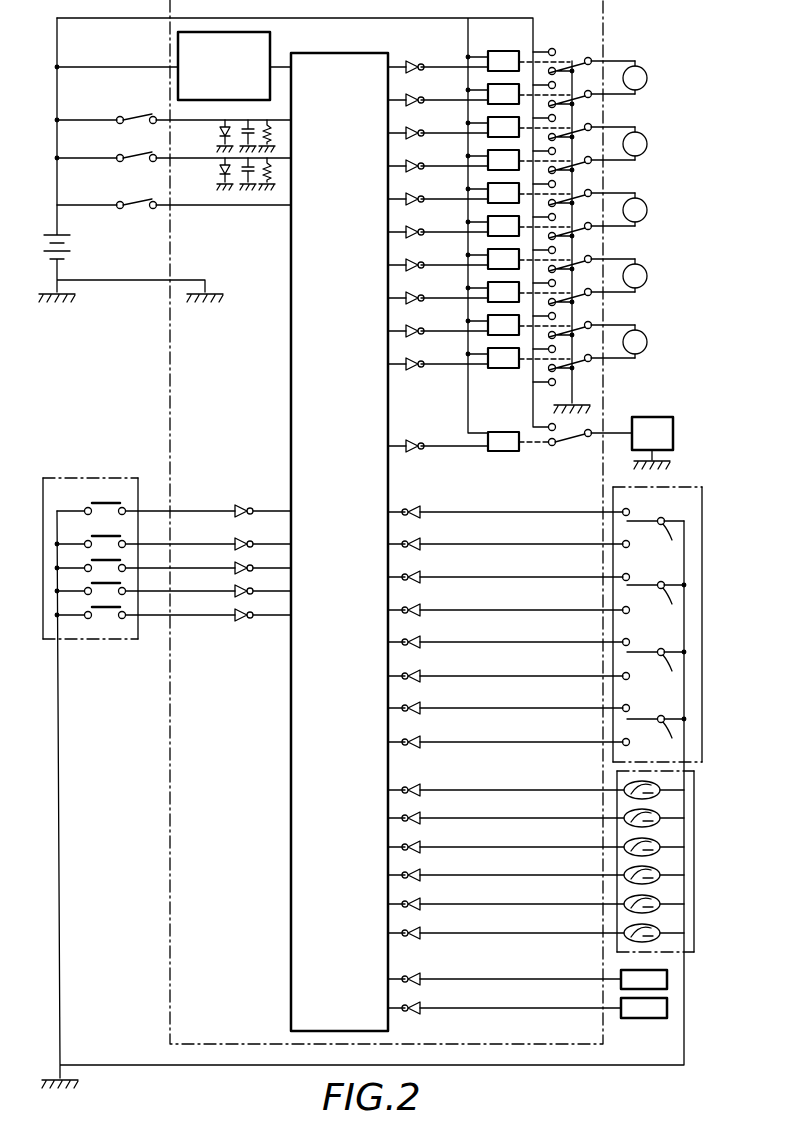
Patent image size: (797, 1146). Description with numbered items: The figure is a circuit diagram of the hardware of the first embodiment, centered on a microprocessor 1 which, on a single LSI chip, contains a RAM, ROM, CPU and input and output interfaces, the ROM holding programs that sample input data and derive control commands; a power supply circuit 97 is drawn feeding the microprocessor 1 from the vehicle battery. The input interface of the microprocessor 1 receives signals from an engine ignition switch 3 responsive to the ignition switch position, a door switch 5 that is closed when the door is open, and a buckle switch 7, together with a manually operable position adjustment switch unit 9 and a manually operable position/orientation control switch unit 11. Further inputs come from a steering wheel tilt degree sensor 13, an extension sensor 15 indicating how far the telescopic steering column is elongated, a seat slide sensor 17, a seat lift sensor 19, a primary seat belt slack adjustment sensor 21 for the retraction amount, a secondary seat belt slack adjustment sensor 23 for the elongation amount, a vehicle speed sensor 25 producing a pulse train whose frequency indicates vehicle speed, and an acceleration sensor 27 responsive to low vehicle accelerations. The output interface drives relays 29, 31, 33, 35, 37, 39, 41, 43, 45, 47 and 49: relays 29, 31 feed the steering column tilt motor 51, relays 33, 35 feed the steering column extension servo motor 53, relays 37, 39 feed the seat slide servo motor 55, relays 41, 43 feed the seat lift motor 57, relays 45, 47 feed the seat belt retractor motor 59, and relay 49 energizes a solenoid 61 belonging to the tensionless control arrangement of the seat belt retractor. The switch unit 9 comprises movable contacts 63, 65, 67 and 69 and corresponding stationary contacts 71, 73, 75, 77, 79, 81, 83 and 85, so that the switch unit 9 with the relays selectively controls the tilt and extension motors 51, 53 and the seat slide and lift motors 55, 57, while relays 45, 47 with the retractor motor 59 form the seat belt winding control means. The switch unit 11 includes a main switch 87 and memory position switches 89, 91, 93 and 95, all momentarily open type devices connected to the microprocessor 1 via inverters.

The microprocessor 1 is at (362, 53).
The engine ignition switch 3 is at (123, 113).
The door switch 5 is at (123, 151).
The buckle switch 7 is at (128, 195).
The position adjustment switch unit 9 is at (692, 488).
The position/orientation control switch unit 11 is at (41, 509).
The steering wheel tilt degree sensor 13 is at (624, 783).
The extension sensor 15 is at (624, 811).
The seat slide sensor 17 is at (624, 840).
The seat lift sensor 19 is at (624, 868).
The primary seat belt slack adjustment sensor 21 is at (624, 897).
The secondary seat belt slack adjustment sensor 23 is at (624, 926).
The vehicle speed sensor 25 is at (621, 972).
The acceleration sensor 27 is at (621, 1016).
The relay 29 is at (493, 51).
The relay 31 is at (488, 89).
The relay 33 is at (488, 122).
The relay 35 is at (488, 155).
The relay 37 is at (488, 188).
The relay 39 is at (488, 221).
The relay 41 is at (488, 254).
The relay 43 is at (488, 287).
The relay 45 is at (488, 320).
The relay 47 is at (488, 353).
The relay 49 is at (500, 452).
The steering column tilt motor 51 is at (648, 78).
The steering column extension servo motor 53 is at (648, 144).
The seat slide servo motor 55 is at (648, 210).
The seat lift motor 57 is at (648, 276).
The seat belt retractor motor 59 is at (648, 342).
The solenoid 61 is at (658, 417).
The movable contact 63 is at (655, 539).
The movable contact 65 is at (656, 606).
The movable contact 67 is at (656, 672).
The movable contact 69 is at (656, 737).
The stationary contact 71 is at (623, 509).
The stationary contact 73 is at (623, 541).
The stationary contact 75 is at (623, 574).
The stationary contact 77 is at (623, 607).
The stationary contact 79 is at (623, 639).
The stationary contact 81 is at (623, 673).
The stationary contact 83 is at (623, 705).
The stationary contact 85 is at (623, 739).
The main switch 87 is at (110, 503).
The memory position switch 89 is at (115, 536).
The memory position switch 91 is at (100, 560).
The memory position switch 93 is at (100, 583).
The memory position switch 95 is at (105, 607).
The power supply circuit 97 is at (270, 38).